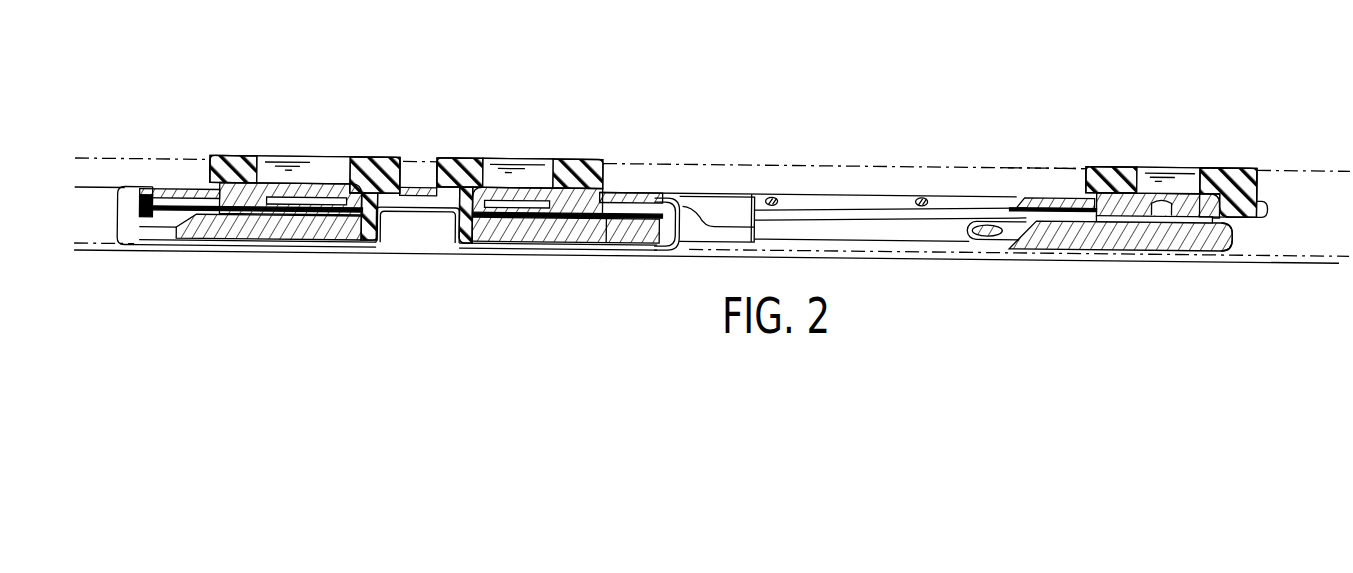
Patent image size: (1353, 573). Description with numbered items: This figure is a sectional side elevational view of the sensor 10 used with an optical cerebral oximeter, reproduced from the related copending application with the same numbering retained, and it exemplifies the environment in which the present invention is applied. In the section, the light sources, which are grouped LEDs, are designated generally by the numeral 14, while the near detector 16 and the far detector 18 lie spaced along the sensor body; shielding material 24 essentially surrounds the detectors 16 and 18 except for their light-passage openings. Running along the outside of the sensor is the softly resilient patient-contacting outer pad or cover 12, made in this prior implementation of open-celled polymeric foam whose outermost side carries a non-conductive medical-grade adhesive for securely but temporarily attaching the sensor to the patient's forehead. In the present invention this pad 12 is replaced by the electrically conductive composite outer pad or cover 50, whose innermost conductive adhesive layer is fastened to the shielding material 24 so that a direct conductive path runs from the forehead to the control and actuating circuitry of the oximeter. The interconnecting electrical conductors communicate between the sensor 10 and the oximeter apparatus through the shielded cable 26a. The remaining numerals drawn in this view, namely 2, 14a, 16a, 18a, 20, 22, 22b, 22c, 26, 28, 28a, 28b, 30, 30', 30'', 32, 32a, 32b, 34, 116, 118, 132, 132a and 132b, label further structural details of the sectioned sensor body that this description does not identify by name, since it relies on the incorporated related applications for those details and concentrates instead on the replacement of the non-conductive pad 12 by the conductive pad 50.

The center line 2 is at (93, 156).
The sensor 10 is at (692, 215).
The outer patient-contacting pad or cover 12 is at (984, 183).
The light sources 14 is at (1198, 127).
The cap end wall 14a is at (1208, 156).
The near detector 16 is at (549, 138).
The cap extension member 16a is at (677, 192).
The far detector 18 is at (330, 148).
The cap side wall 18a is at (229, 154).
The base line 20 is at (92, 252).
The support sheet 22 is at (813, 156).
The sheet plate 22b is at (855, 188).
The rivet 22c is at (774, 188).
The shielding material 24 is at (146, 187).
The backing plate 26 is at (605, 244).
The shielded cable 26a is at (128, 244).
The cap shoulder 28 is at (1097, 156).
The cap shoulder 28a is at (472, 154).
The cap shoulder 28b is at (390, 154).
The top surface 30 is at (1169, 137).
The top surface 30' is at (573, 110).
The top surface 30'' is at (304, 120).
The channel corner 32 is at (1225, 240).
The channel wall 32a is at (458, 244).
The channel 32b is at (372, 244).
The rounded end 34 is at (637, 244).
The outer pad or cover 50 is at (876, 166).
The insert body 116 is at (514, 196).
The insert body 118 is at (303, 183).
The lower plate 132 is at (1128, 315).
The lower plate 132a is at (542, 244).
The lower plate 132b is at (267, 244).